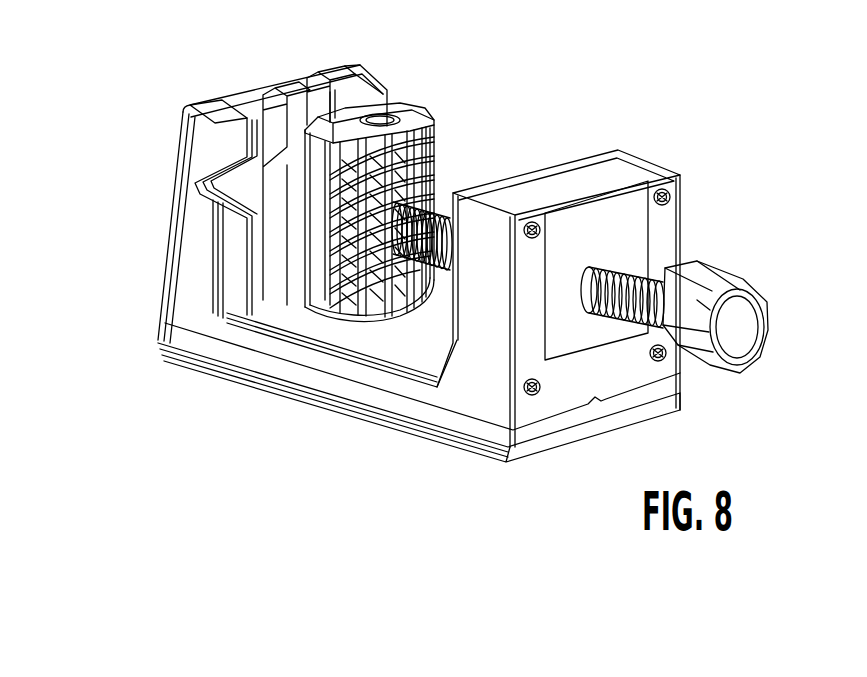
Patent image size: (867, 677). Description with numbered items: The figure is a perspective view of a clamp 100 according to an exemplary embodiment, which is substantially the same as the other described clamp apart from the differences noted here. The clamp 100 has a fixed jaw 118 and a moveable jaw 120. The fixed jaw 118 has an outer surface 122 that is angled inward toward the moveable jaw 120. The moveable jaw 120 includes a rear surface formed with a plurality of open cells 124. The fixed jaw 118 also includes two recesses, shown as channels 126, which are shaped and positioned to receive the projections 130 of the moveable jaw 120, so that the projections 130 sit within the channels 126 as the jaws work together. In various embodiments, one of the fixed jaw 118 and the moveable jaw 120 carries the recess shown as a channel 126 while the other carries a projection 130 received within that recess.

The clamp 100 is at (108, 78).
The fixed jaw 118 is at (370, 74).
The moveable jaw 120 is at (429, 124).
The outer surface 122 is at (212, 199).
The open cells 124 is at (339, 218).
The channels 126 is at (309, 74).
The projections 130 is at (374, 103).